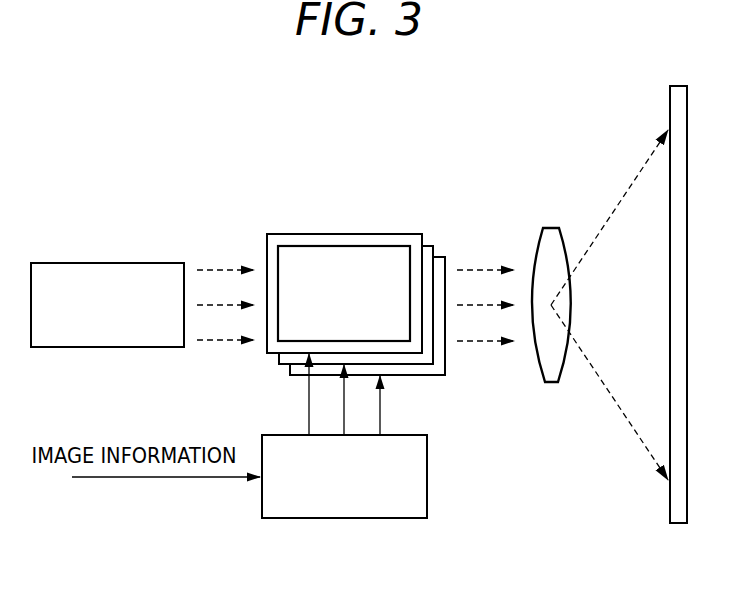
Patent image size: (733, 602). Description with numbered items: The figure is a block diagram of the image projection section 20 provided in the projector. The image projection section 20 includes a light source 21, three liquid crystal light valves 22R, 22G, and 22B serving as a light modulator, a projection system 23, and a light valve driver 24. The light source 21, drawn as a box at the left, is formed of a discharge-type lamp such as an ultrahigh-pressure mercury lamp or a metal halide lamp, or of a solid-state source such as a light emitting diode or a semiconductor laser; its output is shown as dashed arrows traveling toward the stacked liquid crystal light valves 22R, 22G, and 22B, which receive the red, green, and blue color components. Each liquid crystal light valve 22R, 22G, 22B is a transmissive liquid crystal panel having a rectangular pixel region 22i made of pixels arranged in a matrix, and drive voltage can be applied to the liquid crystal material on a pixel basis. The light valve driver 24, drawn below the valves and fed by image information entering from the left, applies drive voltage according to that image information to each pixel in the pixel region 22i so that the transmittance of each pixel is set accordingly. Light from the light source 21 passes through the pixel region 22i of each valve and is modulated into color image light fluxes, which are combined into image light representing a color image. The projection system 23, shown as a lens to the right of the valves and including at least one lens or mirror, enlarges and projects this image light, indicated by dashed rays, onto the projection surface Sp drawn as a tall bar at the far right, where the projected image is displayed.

The image projection section 20 is at (108, 141).
The light source 21 is at (130, 263).
The liquid crystal light valve 22R is at (357, 234).
The liquid crystal light valve 22G is at (432, 246).
The liquid crystal light valve 22B is at (440, 257).
The pixel region 22i is at (280, 339).
The projection system 23 is at (551, 228).
The light valve driver 24 is at (410, 434).
The projection surface Sp is at (670, 105).